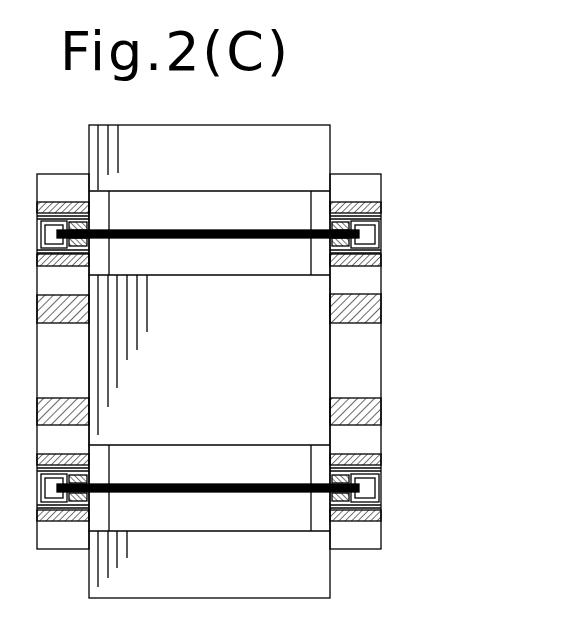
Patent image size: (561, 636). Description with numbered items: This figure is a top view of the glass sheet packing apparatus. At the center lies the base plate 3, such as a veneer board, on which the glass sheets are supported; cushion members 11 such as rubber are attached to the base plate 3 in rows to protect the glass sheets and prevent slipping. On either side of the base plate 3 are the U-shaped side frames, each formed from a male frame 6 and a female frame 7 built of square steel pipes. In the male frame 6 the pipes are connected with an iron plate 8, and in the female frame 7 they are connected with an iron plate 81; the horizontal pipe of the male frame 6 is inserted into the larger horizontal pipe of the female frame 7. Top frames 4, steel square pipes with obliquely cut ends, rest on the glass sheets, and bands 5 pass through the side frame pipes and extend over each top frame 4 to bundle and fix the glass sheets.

The base plate 3 is at (368, 183).
The top frame 4 is at (286, 207).
The band 5 is at (192, 228).
The male frame 6 is at (383, 237).
The female frame 7 is at (63, 201).
The iron plate 8 is at (356, 523).
The iron plate 81 is at (66, 517).
The cushion member 11 is at (381, 413).